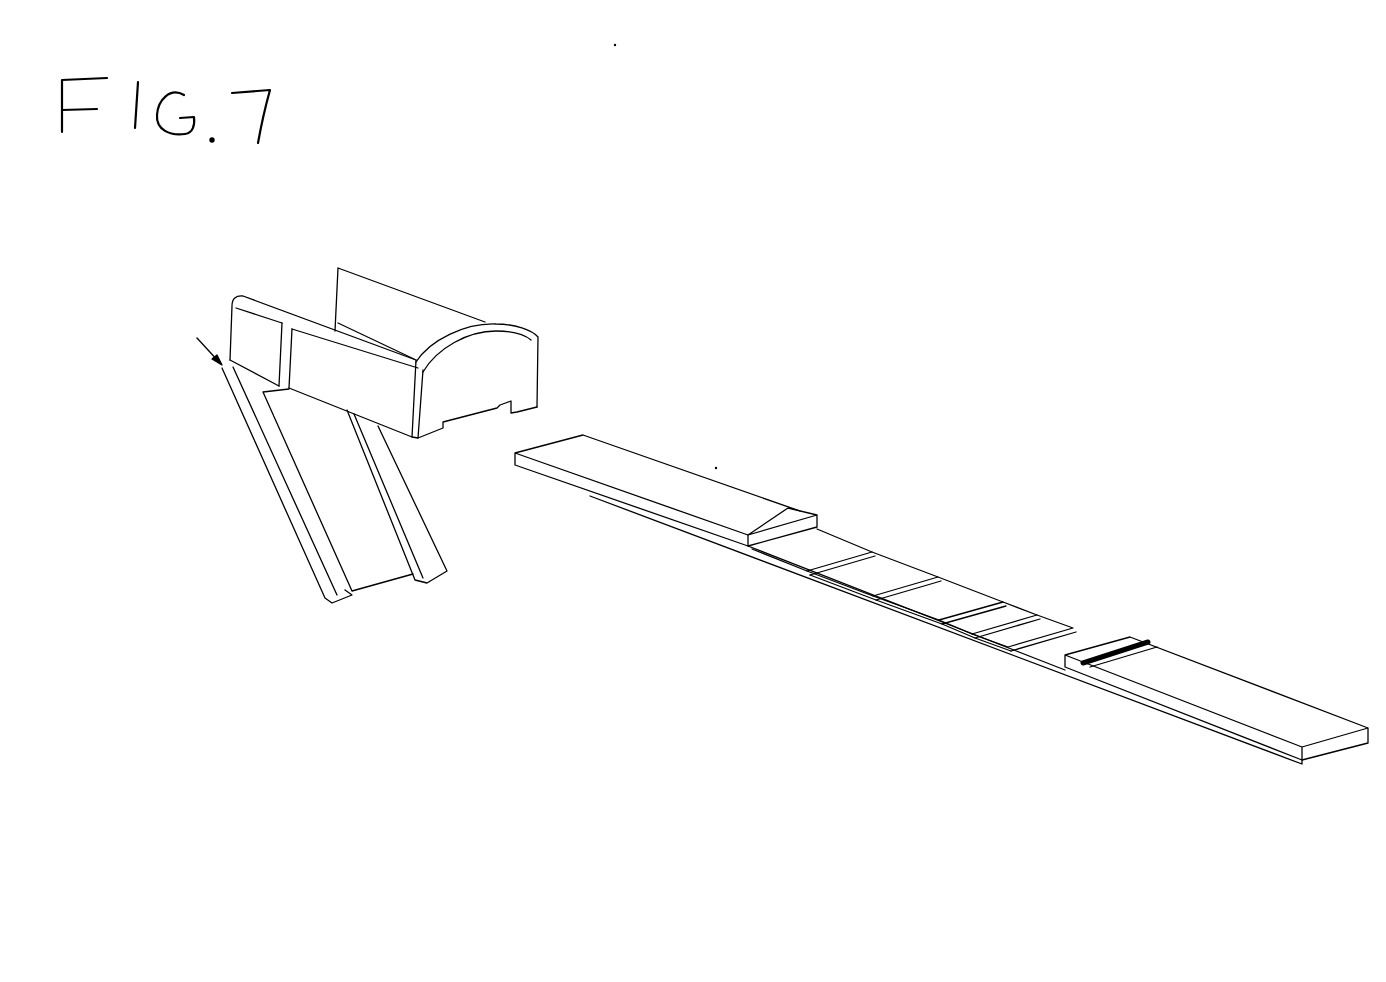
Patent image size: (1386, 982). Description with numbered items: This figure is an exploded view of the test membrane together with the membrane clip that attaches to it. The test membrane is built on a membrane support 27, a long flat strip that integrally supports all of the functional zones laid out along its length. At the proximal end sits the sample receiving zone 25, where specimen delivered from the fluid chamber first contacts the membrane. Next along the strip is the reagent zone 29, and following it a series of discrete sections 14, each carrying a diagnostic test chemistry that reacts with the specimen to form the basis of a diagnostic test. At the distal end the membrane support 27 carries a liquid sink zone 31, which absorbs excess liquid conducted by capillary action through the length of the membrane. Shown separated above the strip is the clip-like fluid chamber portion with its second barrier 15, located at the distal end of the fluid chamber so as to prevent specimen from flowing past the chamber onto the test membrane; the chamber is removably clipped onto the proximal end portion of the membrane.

The sections 14 is at (945, 588).
The second barrier 15 is at (507, 343).
The sample receiving zone 25 is at (694, 497).
The membrane support 27 is at (760, 564).
The reagent zone 29 is at (823, 539).
The liquid sink zone 31 is at (1214, 690).